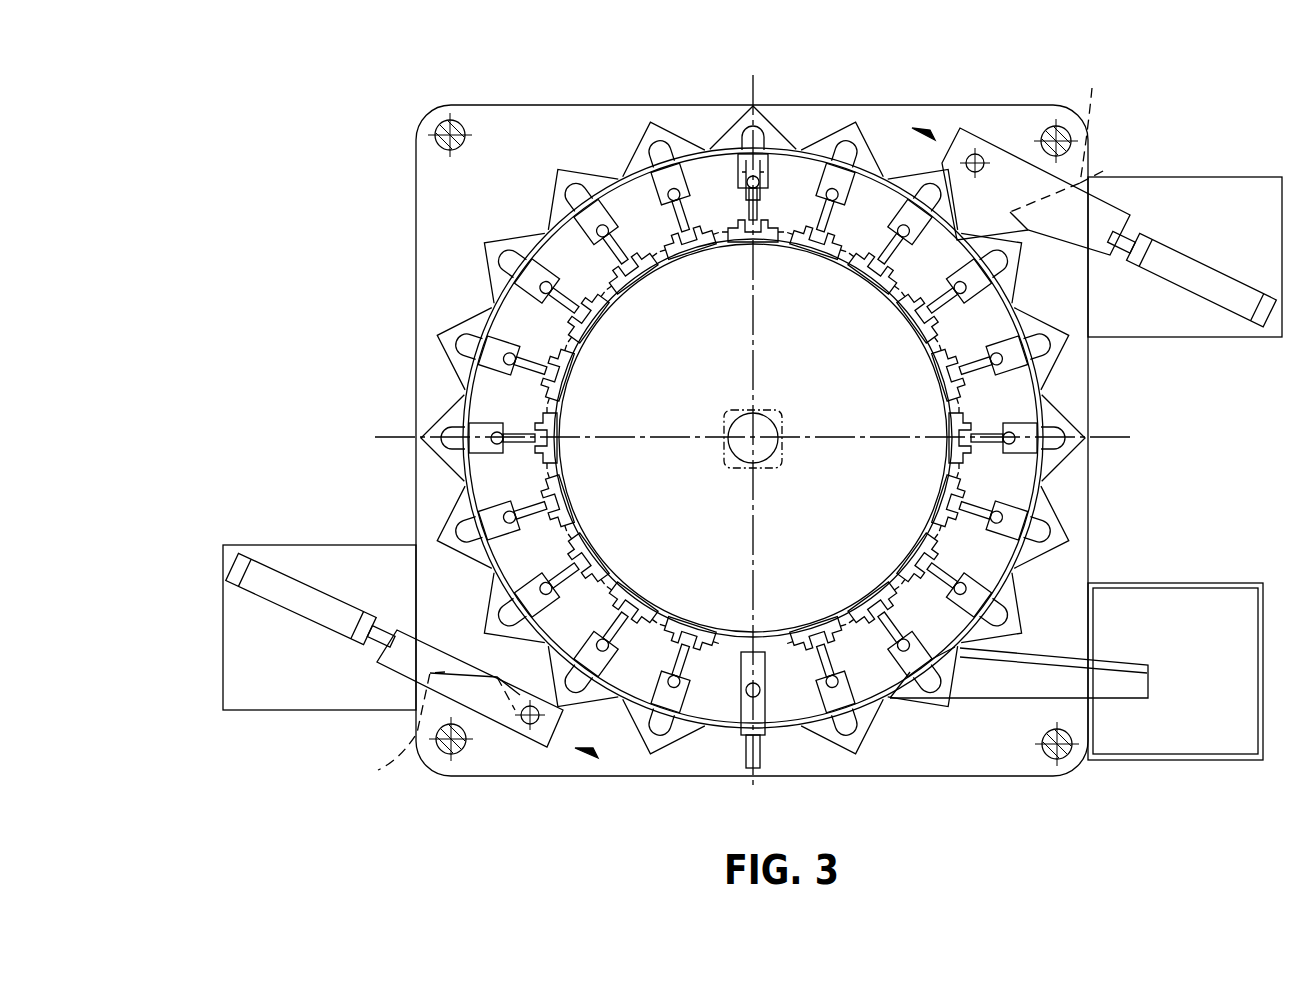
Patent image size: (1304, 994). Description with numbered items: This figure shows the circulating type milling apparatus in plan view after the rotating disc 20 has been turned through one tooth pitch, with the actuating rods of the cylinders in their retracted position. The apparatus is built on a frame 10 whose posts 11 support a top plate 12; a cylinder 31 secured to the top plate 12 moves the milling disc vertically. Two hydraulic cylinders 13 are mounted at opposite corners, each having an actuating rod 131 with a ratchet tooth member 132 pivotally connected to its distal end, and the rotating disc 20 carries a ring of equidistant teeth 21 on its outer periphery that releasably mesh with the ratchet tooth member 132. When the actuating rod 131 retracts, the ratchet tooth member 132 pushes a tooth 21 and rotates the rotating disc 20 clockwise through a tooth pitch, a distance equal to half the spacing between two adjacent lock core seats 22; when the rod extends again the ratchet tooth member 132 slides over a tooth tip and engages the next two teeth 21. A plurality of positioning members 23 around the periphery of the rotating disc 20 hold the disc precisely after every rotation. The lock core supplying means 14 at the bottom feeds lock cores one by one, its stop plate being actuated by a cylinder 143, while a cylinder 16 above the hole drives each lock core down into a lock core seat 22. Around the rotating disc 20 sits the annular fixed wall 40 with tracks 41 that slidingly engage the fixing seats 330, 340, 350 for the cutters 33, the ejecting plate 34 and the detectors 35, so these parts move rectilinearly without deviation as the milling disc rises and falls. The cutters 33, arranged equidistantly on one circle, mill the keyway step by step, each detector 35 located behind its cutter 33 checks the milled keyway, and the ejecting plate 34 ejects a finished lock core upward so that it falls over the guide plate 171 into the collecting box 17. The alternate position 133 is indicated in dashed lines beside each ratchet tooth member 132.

The frame 10 is at (1088, 556).
The posts 11 is at (442, 122).
The top plate 12 is at (800, 545).
The hydraulic cylinder 13 is at (747, 443).
The actuating rod 131 is at (1135, 238).
The ratchet tooth member 132 is at (1010, 240).
The lever alternate position 133 is at (1092, 88).
The lock core supplying means 14 is at (725, 662).
The cylinder 143 is at (758, 765).
The cylinder 16 is at (766, 642).
The collecting box 17 is at (1260, 588).
The guide plate 171 is at (1128, 690).
The rotating disc 20 is at (714, 428).
The teeth 21 is at (480, 330).
The lock core seat 22 is at (750, 220).
The positioning member 23 is at (470, 350).
The cylinder 31 is at (778, 455).
The cutter 33 is at (818, 230).
The fixing seat 330 is at (815, 250).
The ejecting plate 34 is at (876, 650).
The fixing seat 340 is at (878, 612).
The detector 35 is at (740, 190).
The fixing seat 350 is at (740, 240).
The annular fixed wall 40 is at (622, 632).
The tracks 41 is at (795, 222).